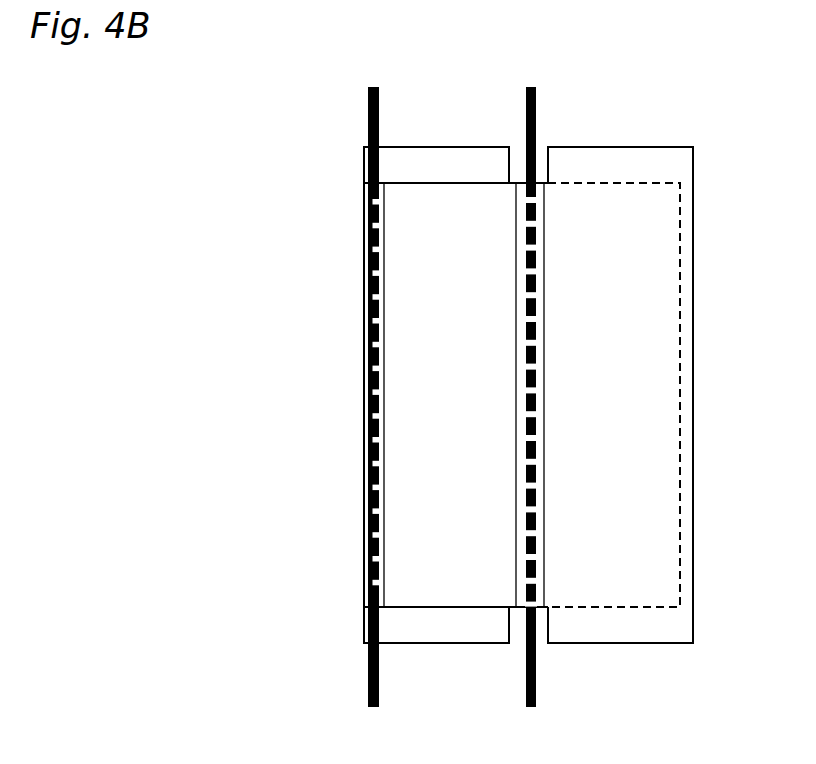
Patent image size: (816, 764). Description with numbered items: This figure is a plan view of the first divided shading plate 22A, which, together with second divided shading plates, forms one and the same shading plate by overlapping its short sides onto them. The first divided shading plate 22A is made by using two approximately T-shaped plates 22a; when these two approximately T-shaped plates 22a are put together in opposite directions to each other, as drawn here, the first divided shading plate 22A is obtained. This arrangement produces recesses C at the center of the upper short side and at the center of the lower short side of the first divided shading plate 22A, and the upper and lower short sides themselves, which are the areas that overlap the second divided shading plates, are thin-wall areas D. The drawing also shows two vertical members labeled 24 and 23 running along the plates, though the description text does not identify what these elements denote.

The first divided shading plate 22A is at (722, 150).
The approximately T-shaped plate 22a is at (467, 155).
The electrode bar 24 is at (374, 87).
The electrode bar 23 is at (531, 87).
The thin-wall area D is at (411, 155).
The recess C is at (548, 152).